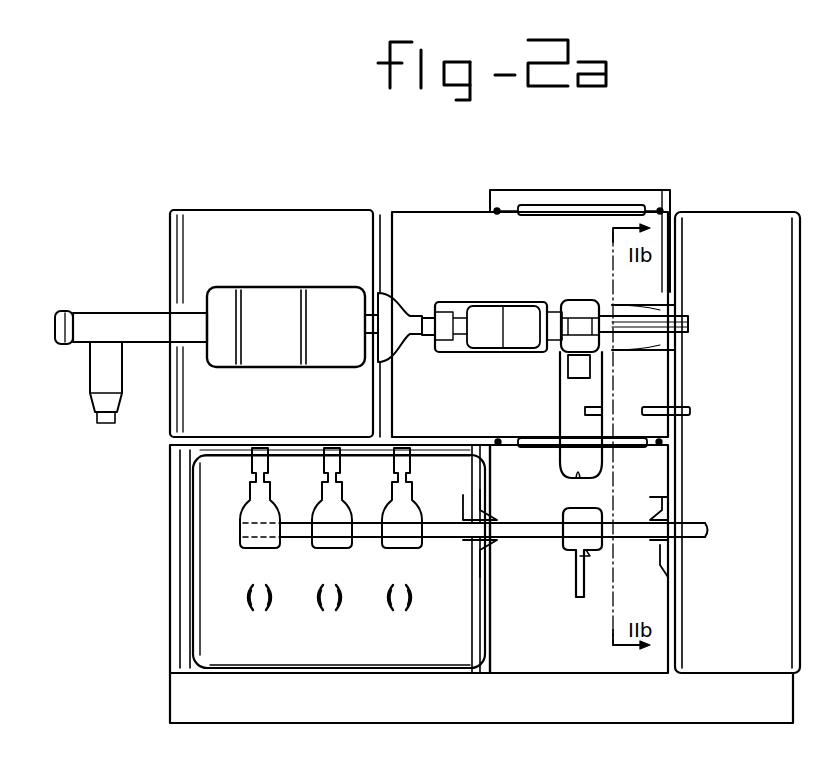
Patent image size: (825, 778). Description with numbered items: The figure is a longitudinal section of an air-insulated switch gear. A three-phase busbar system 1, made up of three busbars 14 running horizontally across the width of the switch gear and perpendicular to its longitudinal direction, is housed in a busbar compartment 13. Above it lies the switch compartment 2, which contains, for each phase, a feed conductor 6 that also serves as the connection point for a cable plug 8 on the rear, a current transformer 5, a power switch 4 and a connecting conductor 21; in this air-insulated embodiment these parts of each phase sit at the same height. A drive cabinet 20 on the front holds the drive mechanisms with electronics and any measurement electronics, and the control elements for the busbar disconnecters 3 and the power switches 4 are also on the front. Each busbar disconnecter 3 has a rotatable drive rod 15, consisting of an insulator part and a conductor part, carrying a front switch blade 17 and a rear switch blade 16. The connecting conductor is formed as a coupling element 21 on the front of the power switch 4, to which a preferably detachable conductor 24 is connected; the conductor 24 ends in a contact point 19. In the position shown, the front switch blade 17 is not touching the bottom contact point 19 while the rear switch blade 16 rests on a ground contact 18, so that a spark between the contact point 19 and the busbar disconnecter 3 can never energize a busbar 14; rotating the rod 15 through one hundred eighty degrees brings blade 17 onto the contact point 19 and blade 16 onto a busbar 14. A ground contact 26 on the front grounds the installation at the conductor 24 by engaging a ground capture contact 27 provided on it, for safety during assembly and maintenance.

The busbar system 1 is at (232, 622).
The switch compartment 2 is at (420, 228).
The busbar disconnecter 3 is at (506, 550).
The power switch 4 is at (524, 318).
The current transformer 5 is at (328, 347).
The feed conductor 6 is at (163, 327).
The cable plug 8 is at (98, 378).
The busbar compartment 13 is at (193, 567).
The busbars 14 is at (387, 603).
The drive rod 15 is at (627, 530).
The rear switch blade 16 is at (405, 510).
The front switch blade 17 is at (604, 550).
The ground contact 18 is at (402, 440).
The contact point 19 is at (585, 470).
The drive cabinet 20 is at (731, 233).
The connecting conductor 21 is at (581, 304).
The conductor 24 is at (560, 395).
The ground contact 26 is at (690, 411).
The ground capture contact 27 is at (602, 412).